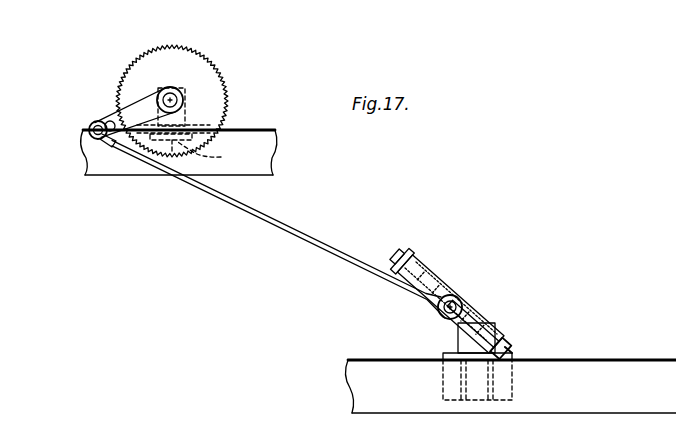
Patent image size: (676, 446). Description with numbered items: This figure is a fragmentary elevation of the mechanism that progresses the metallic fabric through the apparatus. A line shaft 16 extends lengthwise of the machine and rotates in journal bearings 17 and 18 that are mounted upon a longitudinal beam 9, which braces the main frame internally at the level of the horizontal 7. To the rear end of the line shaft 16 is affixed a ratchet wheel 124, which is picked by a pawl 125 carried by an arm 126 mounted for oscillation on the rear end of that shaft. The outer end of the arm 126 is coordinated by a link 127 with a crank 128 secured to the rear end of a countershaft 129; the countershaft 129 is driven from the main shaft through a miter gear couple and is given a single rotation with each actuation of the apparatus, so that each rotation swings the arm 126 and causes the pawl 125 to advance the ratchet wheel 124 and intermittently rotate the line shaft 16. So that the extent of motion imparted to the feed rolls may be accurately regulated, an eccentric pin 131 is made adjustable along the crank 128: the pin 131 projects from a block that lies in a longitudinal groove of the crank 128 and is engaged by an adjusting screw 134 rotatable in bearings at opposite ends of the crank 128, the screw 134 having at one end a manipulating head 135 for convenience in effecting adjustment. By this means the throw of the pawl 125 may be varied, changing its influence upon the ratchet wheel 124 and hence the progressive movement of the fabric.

The horizontal 7 is at (140, 170).
The longitudinal beam 9 is at (207, 154).
The line shaft 16 is at (166, 95).
The journal bearing 17 is at (182, 107).
The journal bearing 18 is at (462, 262).
The ratchet wheel 124 is at (194, 50).
The pawl 125 is at (119, 145).
The arm 126 is at (141, 107).
The link 127 is at (287, 231).
The crank 128 is at (505, 345).
The countershaft 129 is at (443, 352).
The eccentric pin 131 is at (463, 305).
The adjusting screw 134 is at (431, 266).
The manipulating head 135 is at (513, 358).